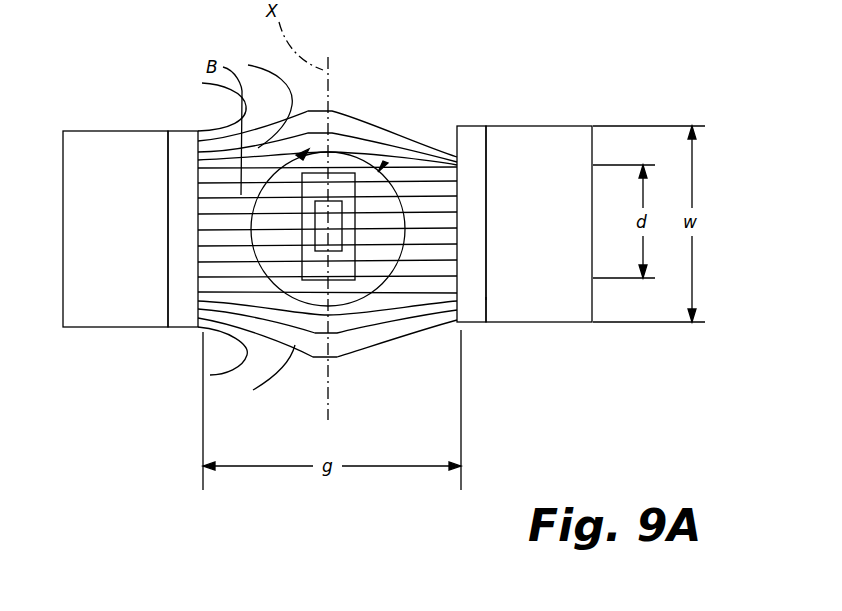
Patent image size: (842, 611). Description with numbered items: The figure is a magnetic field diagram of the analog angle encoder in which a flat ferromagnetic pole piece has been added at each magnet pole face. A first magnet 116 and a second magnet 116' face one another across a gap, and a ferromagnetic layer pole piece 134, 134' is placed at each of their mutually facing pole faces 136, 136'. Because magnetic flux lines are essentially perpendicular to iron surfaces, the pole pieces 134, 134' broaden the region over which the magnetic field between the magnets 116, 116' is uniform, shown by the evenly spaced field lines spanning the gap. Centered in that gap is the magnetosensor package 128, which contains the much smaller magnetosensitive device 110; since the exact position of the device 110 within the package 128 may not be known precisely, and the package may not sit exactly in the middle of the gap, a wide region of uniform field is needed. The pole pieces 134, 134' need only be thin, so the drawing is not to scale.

The first magnet 116 is at (115, 194).
The ferromagnetic layer pole piece 134 is at (166, 178).
The pole face 136 is at (168, 344).
The second magnet 116' is at (539, 190).
The ferromagnetic layer pole piece 134' is at (470, 182).
The pole face 136' is at (509, 337).
The magnetosensitive device 110 is at (337, 200).
The magnetosensor package 128 is at (347, 281).